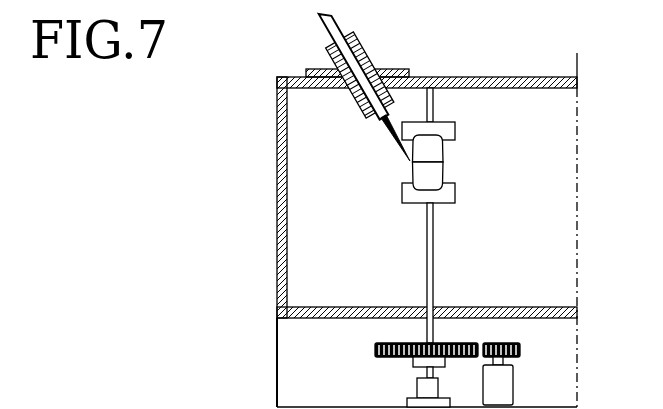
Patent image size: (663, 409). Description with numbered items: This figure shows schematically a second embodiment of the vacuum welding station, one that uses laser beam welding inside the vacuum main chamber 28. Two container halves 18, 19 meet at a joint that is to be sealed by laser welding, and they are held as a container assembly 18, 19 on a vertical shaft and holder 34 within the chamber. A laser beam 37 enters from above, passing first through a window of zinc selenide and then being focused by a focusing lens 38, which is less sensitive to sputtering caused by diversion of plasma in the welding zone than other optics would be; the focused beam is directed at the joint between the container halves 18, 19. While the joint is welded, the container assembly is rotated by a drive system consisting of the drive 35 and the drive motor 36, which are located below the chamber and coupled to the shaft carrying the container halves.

The container half 18 is at (428, 175).
The container half 19 is at (427, 153).
The vacuum main chamber 28 is at (524, 88).
The lens holder 34 is at (445, 195).
The drive 35 is at (425, 387).
The drive motor 36 is at (497, 386).
The laser beam 37 is at (328, 28).
The focusing lens 38 is at (370, 123).